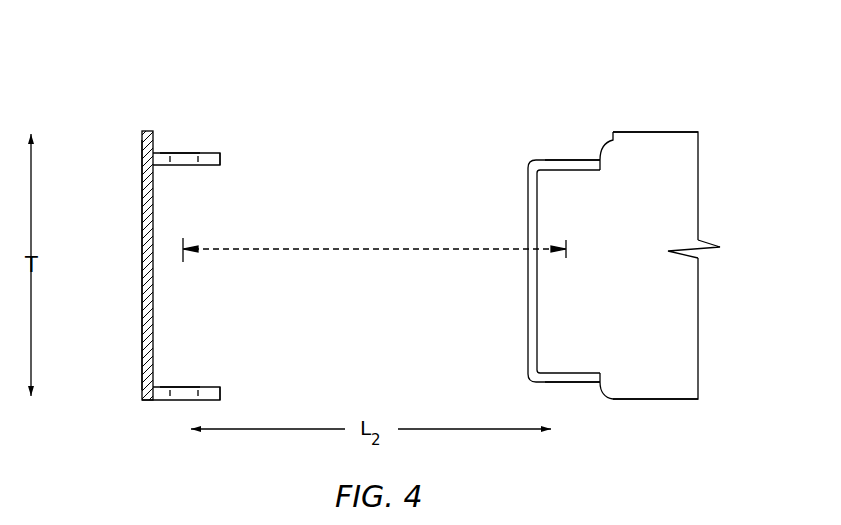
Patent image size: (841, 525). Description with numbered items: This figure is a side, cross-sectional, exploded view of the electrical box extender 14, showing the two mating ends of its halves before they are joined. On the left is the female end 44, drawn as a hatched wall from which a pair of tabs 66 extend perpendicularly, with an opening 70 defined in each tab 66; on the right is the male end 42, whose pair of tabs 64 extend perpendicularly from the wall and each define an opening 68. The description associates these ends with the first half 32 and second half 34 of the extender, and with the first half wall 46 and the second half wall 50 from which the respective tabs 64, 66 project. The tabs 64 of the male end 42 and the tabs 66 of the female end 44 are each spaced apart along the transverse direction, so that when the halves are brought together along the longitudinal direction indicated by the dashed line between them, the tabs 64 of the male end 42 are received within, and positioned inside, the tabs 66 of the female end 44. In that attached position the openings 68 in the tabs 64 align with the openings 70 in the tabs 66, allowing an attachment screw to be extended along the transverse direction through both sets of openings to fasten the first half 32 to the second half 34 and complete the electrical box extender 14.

The electrical box extender 14 is at (165, 228).
The first half 32 is at (118, 235).
The second half 34 is at (676, 197).
The male end 42 is at (532, 148).
The female end 44 is at (216, 115).
The first half wall 46 is at (142, 266).
The second half wall 50 is at (668, 223).
The tabs 64 is at (591, 171).
The tabs 66 is at (219, 157).
The opening 68 is at (567, 158).
The opening 70 is at (181, 151).